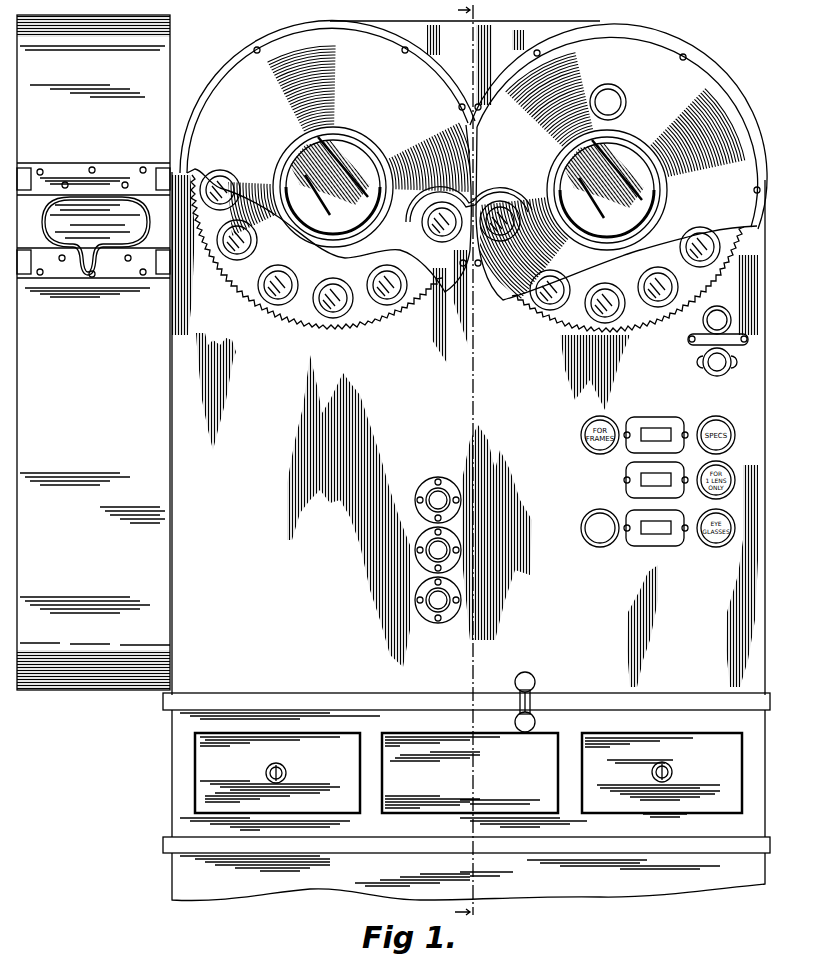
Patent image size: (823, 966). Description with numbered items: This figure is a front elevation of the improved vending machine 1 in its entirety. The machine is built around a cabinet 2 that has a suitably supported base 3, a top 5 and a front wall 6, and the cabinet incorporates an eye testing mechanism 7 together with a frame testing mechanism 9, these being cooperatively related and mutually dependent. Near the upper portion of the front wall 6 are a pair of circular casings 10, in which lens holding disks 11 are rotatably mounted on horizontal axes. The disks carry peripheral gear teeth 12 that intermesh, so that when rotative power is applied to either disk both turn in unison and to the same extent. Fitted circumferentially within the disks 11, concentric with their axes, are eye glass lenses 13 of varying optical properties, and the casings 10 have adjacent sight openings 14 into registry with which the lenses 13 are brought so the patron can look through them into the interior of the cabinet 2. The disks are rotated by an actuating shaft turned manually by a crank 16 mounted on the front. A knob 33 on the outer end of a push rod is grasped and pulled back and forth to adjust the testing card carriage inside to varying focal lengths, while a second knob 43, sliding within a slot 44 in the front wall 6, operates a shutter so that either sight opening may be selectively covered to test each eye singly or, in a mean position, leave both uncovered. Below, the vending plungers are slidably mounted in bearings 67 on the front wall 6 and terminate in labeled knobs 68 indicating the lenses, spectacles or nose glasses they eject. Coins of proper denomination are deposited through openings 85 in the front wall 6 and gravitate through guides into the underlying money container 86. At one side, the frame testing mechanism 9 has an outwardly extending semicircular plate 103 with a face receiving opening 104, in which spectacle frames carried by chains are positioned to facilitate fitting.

The vending machine 1 is at (572, 896).
The cabinet 2 is at (147, 712).
The base 3 is at (182, 703).
The top 5 is at (616, 213).
The front wall 6 is at (465, 356).
The eye testing mechanism 7 is at (522, 318).
The frame testing mechanism 9 is at (163, 337).
The circular casings 10 is at (385, 62).
The lens holding disks 11 is at (370, 318).
The peripheral gear teeth 12 is at (306, 328).
The eye glass lenses 13 is at (334, 293).
The sight openings 14 is at (501, 208).
The crank 16 is at (537, 692).
The knob 33 is at (702, 322).
The knob 43 is at (716, 366).
The slot 44 is at (730, 368).
The bearings 67 is at (418, 590).
The knobs 68 is at (424, 497).
The coin openings 85 is at (648, 523).
The money container 86 is at (680, 748).
The semicircular plate 103 is at (125, 278).
The face receiving opening 104 is at (92, 208).